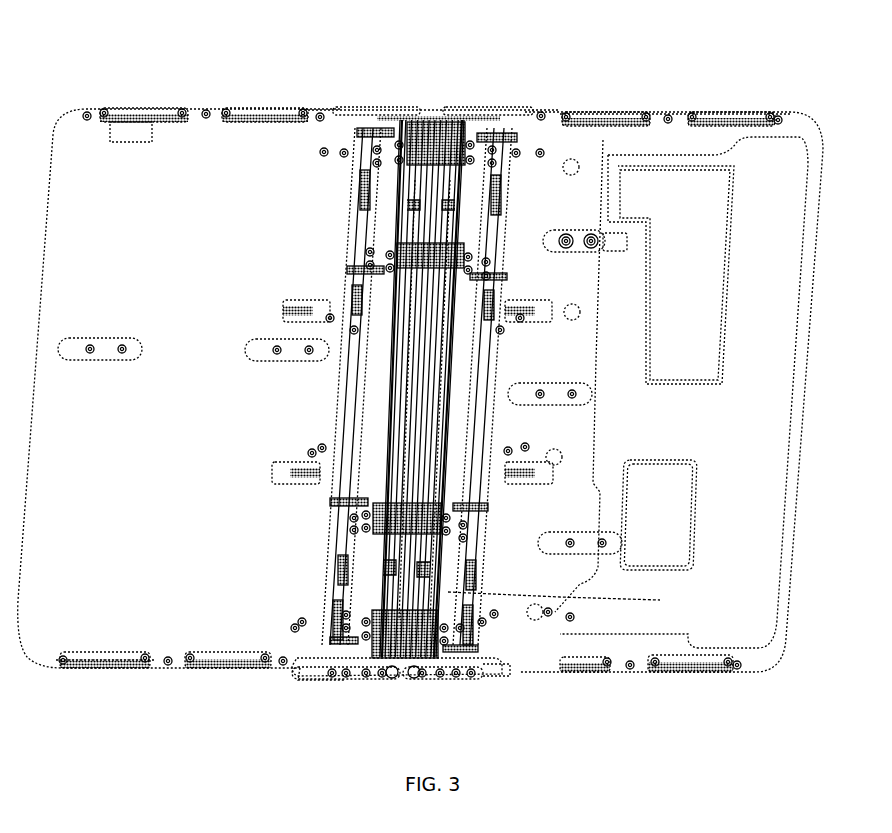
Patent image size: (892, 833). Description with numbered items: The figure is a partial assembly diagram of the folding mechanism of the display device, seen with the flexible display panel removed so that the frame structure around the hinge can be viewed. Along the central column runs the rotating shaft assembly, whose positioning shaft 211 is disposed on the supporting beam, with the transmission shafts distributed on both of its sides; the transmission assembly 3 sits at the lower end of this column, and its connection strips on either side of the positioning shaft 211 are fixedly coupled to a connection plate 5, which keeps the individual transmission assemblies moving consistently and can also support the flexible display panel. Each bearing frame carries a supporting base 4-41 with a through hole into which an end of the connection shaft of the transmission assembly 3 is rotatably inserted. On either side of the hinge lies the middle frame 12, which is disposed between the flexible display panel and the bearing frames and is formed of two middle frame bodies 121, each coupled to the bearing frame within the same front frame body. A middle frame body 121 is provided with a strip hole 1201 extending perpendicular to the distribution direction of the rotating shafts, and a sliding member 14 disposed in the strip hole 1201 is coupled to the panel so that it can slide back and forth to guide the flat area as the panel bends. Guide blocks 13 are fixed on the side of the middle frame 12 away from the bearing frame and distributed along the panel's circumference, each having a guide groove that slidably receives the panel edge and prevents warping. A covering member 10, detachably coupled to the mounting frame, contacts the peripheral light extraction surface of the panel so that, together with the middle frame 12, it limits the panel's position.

The middle frame 12 is at (420, 345).
The middle frame body 121 is at (268, 170).
The guide block 13 is at (750, 120).
The sliding member 14 is at (580, 238).
The strip hole 1201 is at (620, 245).
The positioning shaft 211 is at (443, 413).
The connection plate 5 is at (660, 600).
The supporting base of bearing frame 4-41 is at (314, 673).
The transmission assembly 3 is at (382, 680).
The covering member 10 is at (460, 680).